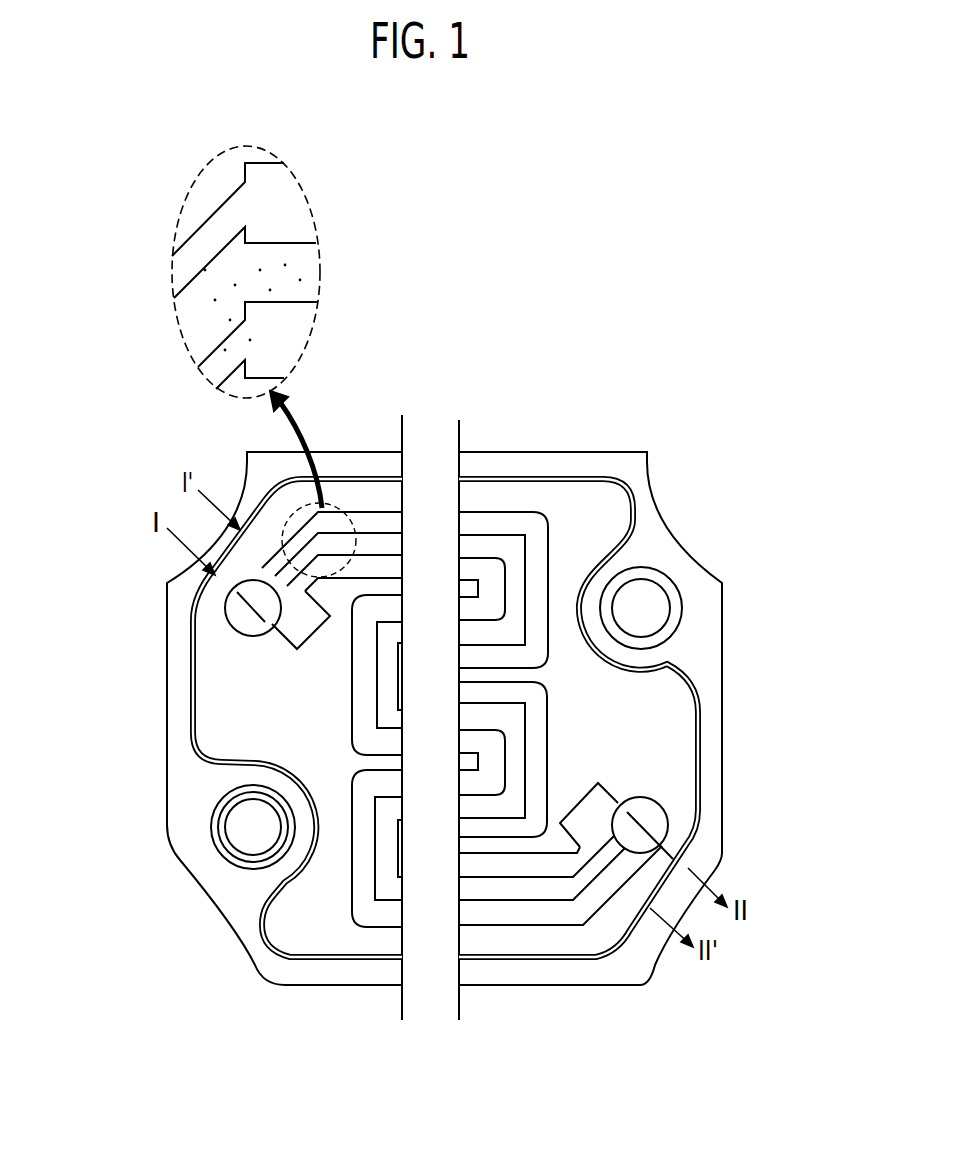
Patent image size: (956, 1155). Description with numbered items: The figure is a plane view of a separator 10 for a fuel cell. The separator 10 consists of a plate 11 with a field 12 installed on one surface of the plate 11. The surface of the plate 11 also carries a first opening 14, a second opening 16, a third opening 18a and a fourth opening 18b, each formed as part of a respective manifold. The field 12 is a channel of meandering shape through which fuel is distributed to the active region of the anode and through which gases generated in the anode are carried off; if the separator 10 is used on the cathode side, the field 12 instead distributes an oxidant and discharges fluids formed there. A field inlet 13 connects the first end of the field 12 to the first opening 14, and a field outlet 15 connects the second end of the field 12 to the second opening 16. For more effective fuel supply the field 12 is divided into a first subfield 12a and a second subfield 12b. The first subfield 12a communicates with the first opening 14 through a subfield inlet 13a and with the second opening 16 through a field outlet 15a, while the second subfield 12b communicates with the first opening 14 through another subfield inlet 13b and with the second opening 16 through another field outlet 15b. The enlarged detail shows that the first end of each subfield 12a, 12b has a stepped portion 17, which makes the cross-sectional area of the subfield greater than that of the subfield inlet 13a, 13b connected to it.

The separator 10 is at (632, 440).
The plate 11 is at (724, 708).
The field 12 is at (370, 500).
The first subfield 12a is at (480, 565).
The second subfield 12b is at (508, 520).
The field inlet 13 is at (262, 527).
The subfield inlet 13a is at (226, 347).
The subfield inlet 13b is at (210, 231).
The first opening 14 is at (235, 604).
The field outlet 15 is at (648, 1042).
The field outlet 15a is at (607, 887).
The field outlet 15b is at (588, 862).
The second opening 16 is at (650, 823).
The stepped portion 17 is at (316, 282).
The third opening 18a is at (647, 612).
The fourth opening 18b is at (255, 820).